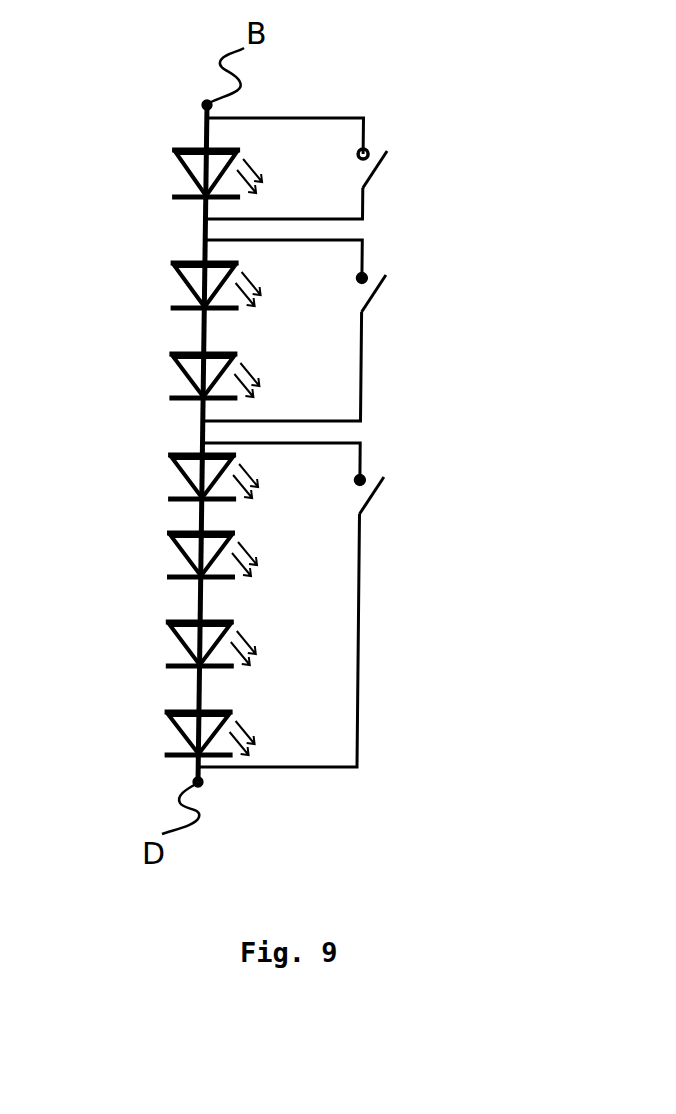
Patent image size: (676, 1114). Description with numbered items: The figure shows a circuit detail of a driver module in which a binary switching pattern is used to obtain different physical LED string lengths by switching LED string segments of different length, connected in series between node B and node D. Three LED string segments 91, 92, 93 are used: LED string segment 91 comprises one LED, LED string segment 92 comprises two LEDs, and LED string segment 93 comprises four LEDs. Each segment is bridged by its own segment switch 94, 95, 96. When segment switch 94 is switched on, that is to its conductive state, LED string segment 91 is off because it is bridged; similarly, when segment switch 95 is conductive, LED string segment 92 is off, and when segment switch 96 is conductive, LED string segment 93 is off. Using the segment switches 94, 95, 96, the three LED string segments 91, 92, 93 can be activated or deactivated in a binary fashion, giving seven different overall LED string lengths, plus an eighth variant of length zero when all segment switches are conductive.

The LED string segment 91 is at (161, 117).
The LED string segment 92 is at (160, 242).
The LED string segment 93 is at (156, 443).
The segment switch 94 is at (373, 175).
The segment switch 95 is at (372, 299).
The segment switch 96 is at (370, 501).